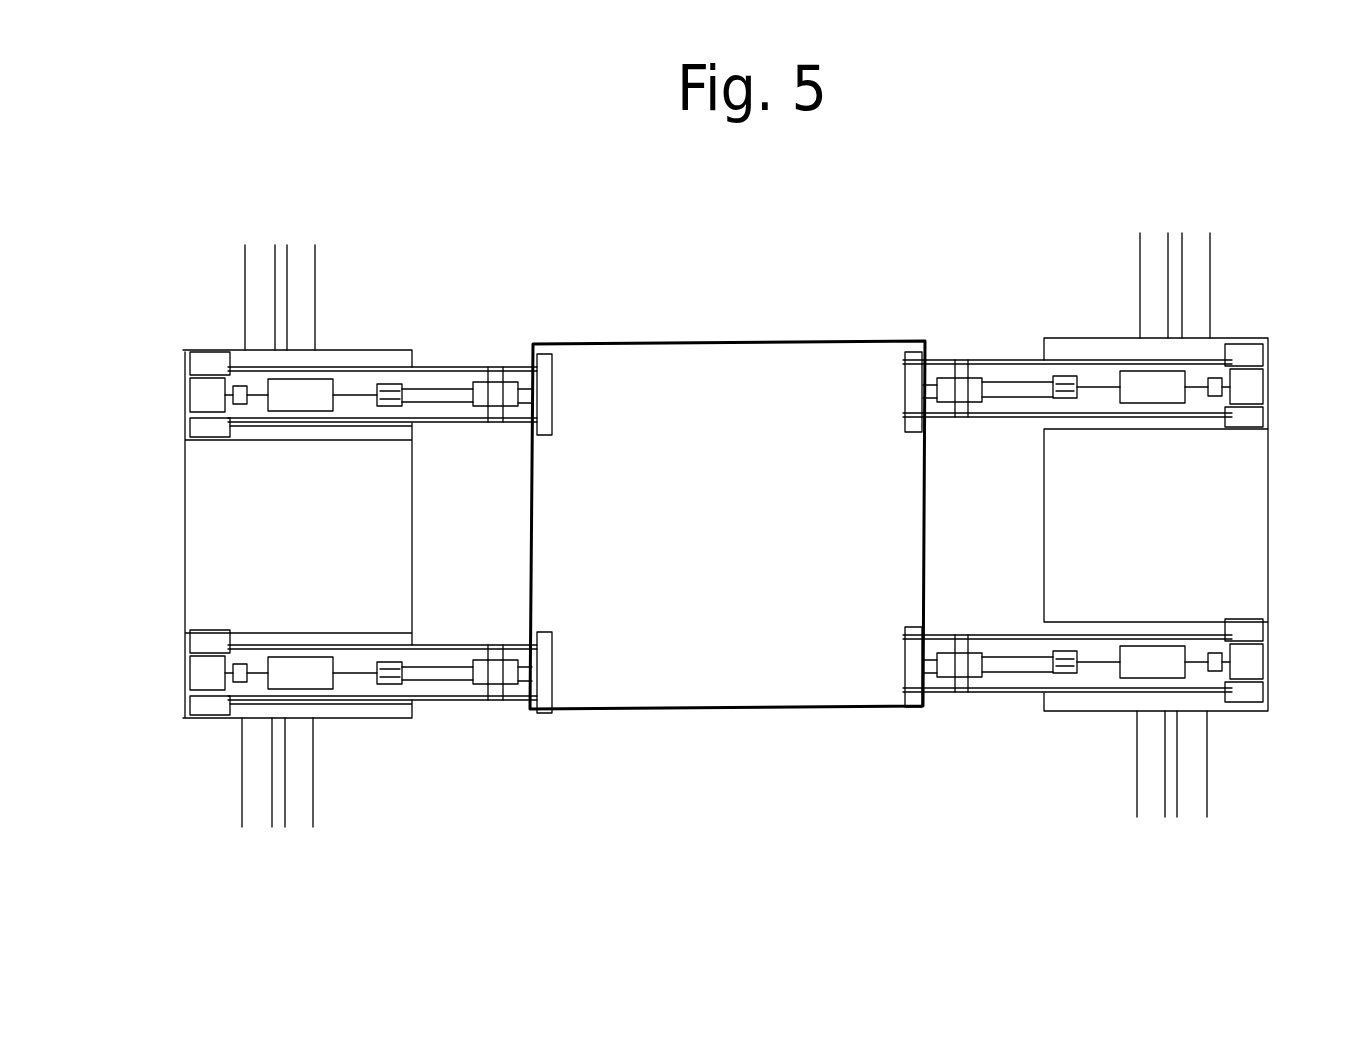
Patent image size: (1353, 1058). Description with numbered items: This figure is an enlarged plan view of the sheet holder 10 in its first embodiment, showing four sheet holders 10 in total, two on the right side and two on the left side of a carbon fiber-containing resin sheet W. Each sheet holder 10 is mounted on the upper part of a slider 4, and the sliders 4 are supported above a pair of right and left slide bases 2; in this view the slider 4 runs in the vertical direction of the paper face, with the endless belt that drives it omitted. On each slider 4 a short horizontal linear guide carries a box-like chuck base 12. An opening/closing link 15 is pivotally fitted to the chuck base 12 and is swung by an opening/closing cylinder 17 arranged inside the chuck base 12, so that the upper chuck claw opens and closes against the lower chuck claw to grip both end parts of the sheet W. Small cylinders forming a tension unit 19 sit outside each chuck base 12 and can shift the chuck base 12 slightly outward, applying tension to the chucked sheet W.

The slide base 2 is at (300, 277).
The slider 4 is at (393, 550).
The sheet holder 10 is at (756, 526).
The chuck base 12 is at (449, 366).
The opening/closing link 15 is at (527, 372).
The opening/closing cylinder 17 is at (300, 398).
The tension unit 19 is at (208, 372).
The carbon fiber-containing resin sheet W is at (742, 549).